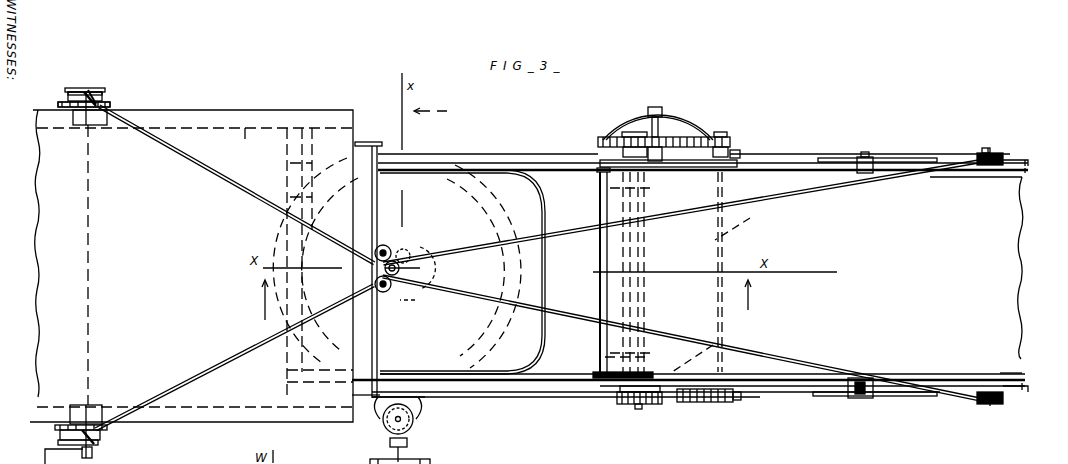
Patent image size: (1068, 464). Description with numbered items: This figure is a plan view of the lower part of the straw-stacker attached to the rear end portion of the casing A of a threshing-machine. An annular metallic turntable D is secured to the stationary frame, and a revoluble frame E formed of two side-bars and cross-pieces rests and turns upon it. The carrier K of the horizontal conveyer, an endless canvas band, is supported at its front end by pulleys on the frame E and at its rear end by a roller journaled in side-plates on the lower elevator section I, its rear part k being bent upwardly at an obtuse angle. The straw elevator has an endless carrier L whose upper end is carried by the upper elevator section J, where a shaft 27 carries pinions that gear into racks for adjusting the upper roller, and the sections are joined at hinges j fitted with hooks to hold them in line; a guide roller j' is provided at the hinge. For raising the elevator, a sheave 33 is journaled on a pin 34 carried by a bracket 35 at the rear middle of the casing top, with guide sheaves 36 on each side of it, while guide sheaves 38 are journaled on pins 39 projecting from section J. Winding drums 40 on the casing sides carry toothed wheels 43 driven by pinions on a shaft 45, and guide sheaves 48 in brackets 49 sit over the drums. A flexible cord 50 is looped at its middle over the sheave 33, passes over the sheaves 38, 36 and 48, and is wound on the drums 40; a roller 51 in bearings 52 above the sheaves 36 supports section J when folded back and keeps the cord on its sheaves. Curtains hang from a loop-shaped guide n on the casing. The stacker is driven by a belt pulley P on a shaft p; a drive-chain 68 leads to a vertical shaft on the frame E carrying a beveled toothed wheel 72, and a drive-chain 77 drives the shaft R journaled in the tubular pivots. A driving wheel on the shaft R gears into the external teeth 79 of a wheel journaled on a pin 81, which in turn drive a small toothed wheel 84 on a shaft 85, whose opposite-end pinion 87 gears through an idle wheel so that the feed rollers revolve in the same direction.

The casing A is at (242, 147).
The turntable D is at (493, 168).
The revoluble frame E is at (542, 384).
The elevator section I is at (743, 165).
The elevator section J is at (1013, 167).
The carrier K is at (567, 344).
The carrier L is at (967, 355).
The shaft R is at (637, 407).
The belt pulley P is at (447, 463).
The loop-shaped guide n is at (543, 257).
The shaft p is at (403, 452).
The rear part of carrier k is at (748, 397).
The hinge j is at (859, 404).
The guide j' is at (878, 142).
The shaft 27 is at (847, 392).
The sheave 33 is at (395, 260).
The pin 34 is at (403, 267).
The bracket 35 is at (405, 250).
The guide sheaves 36 is at (378, 248).
The guide sheaves 38 is at (980, 153).
The pins 39 is at (990, 150).
The winding drums 40 is at (97, 95).
The toothed wheels 43 is at (110, 105).
The shaft 45 is at (88, 300).
The guide sheaves 48 is at (88, 90).
The brackets 49 is at (92, 97).
The flexible connection or cord 50 is at (210, 364).
The roller 51 is at (270, 203).
The bearings 52 is at (365, 137).
The drive-chain 68 is at (422, 302).
The beveled toothed wheel 72 is at (417, 422).
The drive-chain 77 is at (588, 399).
The external teeth 79 is at (677, 135).
The pin 81 is at (658, 104).
The small toothed wheel 84 is at (738, 140).
The shaft 85 is at (730, 232).
The toothed pinion 87 is at (733, 395).